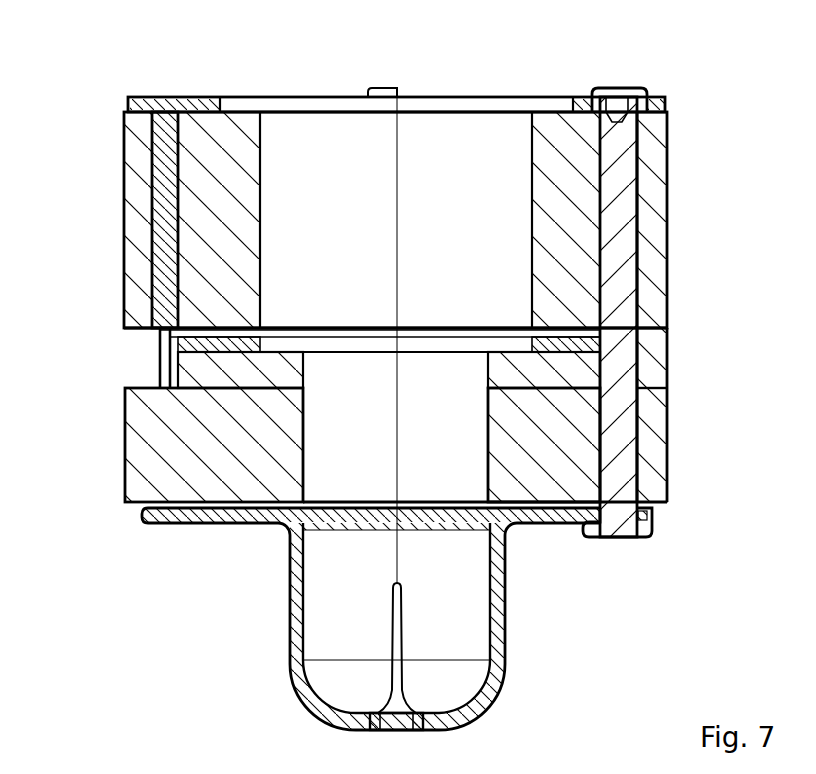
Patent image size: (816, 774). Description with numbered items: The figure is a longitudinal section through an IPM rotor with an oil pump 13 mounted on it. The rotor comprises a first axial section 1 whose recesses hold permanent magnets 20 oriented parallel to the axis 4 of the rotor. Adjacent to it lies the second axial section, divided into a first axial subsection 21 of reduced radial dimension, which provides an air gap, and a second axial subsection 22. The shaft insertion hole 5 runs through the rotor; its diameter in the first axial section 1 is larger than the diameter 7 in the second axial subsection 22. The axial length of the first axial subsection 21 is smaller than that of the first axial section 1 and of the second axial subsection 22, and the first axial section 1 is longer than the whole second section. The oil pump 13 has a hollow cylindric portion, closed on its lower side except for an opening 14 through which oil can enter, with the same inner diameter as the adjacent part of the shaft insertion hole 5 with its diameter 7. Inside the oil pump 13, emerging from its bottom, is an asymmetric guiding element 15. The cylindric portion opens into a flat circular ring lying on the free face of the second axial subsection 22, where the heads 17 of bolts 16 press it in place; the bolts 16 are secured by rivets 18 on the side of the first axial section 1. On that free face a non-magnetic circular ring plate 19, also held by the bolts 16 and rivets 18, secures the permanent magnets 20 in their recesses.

The first axial section 1 is at (693, 112).
The axis 4 is at (399, 122).
The shaft insertion hole 5 is at (472, 150).
The diameter 7 is at (303, 450).
The oil pump 13 is at (290, 613).
The opening 14 is at (405, 731).
The asymmetric guiding element 15 is at (400, 640).
The bolts 16 is at (612, 428).
The heads 17 is at (642, 532).
The rivets 18 is at (619, 90).
The circular ring plate 19 is at (198, 103).
The permanent magnets 20 is at (152, 190).
The first axial subsection 21 is at (118, 335).
The second axial subsection 22 is at (118, 390).